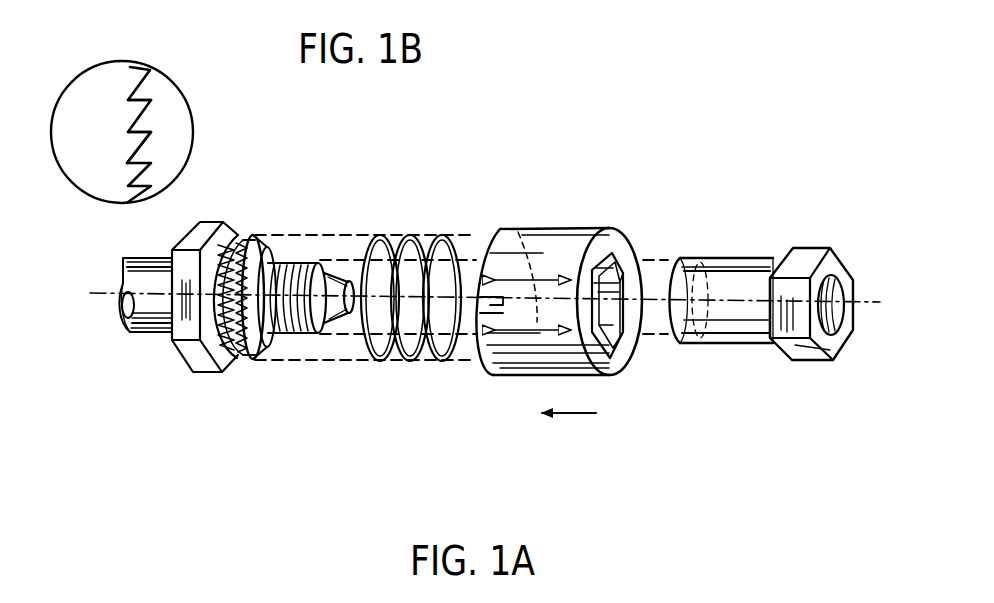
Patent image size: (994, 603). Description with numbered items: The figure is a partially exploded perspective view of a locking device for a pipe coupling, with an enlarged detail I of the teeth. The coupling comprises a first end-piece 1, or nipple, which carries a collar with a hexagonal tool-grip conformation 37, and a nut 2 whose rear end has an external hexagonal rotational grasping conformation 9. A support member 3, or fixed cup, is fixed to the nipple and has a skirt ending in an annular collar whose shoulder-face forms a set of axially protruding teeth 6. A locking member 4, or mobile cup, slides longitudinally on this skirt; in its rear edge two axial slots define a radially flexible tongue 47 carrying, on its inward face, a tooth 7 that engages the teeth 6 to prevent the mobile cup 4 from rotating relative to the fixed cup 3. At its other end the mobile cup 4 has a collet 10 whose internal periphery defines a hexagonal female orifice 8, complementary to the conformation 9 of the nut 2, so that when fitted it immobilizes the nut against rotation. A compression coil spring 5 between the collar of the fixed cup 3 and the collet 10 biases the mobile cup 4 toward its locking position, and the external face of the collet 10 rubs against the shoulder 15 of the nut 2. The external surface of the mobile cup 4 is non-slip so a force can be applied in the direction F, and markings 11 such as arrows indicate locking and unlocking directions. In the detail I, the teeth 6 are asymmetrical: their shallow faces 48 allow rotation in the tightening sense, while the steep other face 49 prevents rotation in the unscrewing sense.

In FIG. 1A, the first end-piece 1 is at (182, 380).
In FIG. 1A, the nut 2 is at (727, 302).
In FIG. 1A, the support member 3 is at (257, 235).
In FIG. 1A, the locking member 4 is at (547, 296).
In FIG. 1A, the compression coil spring 5 is at (413, 237).
In FIG. 1B, the teeth 6 is at (123, 143).
In FIG. 1A, the teeth 6 is at (247, 235).
In FIG. 1A, the tooth 7 is at (477, 245).
In FIG. 1A, the hexagonal shaped female portion 8 is at (637, 277).
In FIG. 1A, the external rotational grasping conformation 9 is at (807, 258).
In FIG. 1A, the collet 10 is at (627, 353).
In FIG. 1A, the markings 11 is at (545, 283).
In FIG. 1A, the shoulder 15 is at (760, 318).
In FIG. 1A, the hexagonal tool-grip conformation 37 is at (203, 228).
In FIG. 1A, the tongue 47 is at (491, 307).
In FIG. 1B, the faces of the teeth 48 is at (133, 115).
In FIG. 1B, the other face of the teeth 49 is at (128, 86).
In FIG. 1B, the detail I is at (187, 88).
In FIG. 1A, the direction F is at (569, 432).